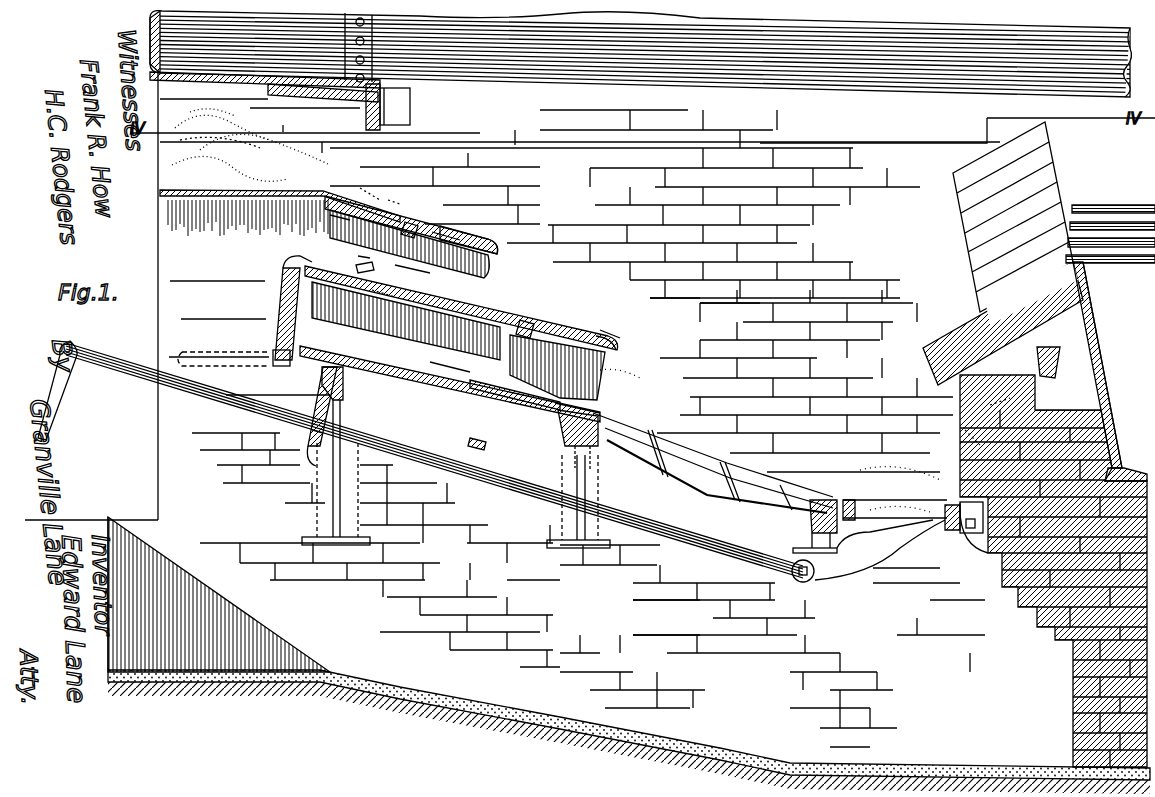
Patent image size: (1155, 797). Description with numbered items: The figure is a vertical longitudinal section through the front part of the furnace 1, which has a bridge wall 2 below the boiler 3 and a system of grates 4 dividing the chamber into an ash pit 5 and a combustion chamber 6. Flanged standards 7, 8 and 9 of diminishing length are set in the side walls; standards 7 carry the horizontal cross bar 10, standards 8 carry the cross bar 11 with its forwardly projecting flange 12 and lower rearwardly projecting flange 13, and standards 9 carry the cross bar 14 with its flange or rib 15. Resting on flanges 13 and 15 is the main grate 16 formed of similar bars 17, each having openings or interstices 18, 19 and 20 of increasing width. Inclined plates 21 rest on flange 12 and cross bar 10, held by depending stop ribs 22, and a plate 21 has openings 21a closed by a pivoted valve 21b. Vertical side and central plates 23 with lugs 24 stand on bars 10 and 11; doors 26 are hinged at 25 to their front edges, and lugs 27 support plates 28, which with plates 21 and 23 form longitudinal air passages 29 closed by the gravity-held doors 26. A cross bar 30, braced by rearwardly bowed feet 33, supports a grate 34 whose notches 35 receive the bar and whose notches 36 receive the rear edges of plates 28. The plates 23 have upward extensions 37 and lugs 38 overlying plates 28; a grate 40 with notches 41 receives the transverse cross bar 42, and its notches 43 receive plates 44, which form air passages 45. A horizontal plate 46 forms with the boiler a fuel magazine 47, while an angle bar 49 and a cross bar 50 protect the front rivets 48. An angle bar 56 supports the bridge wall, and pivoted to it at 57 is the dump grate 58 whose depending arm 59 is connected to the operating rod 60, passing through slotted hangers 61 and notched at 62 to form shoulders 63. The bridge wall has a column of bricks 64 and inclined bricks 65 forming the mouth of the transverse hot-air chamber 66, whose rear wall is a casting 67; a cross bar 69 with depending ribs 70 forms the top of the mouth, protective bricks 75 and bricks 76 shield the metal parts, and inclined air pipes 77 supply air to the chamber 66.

The furnace 1 is at (580, 427).
The bridge wall 2 is at (1073, 698).
The boiler 3 is at (640, 54).
The system of grates 4 is at (616, 340).
The ash pit 5 is at (645, 606).
The combustion chamber 6 is at (705, 274).
The flanged standards 7 is at (300, 520).
The flanged standards 8 is at (560, 527).
The flanged standards 9 is at (797, 548).
The horizontal cross bar 10 is at (345, 385).
The cross bar 11 is at (465, 359).
The forwardly projecting flange 12 is at (560, 428).
The rearwardly projecting flange 13 is at (600, 452).
The cross bar 14 is at (842, 492).
The forwardly projecting flange or rib 15 is at (807, 518).
The main grate 16 is at (705, 460).
The grate bars 17 is at (702, 432).
The openings or interstices 18 is at (717, 471).
The openings or interstices 19 is at (735, 482).
The openings or interstices 20 is at (783, 496).
The inclined plates 21 is at (400, 405).
The openings 21a is at (470, 390).
The pivoted valve 21b is at (470, 352).
The depending stop ribs 22 is at (550, 408).
The side plates and central plate 23 is at (620, 382).
The depending lugs 24 is at (482, 450).
The hinge 25 is at (273, 352).
The doors 26 is at (275, 296).
The lugs 27 is at (400, 296).
The plates 28 is at (300, 262).
The longitudinal air passages 29 is at (406, 321).
The cross bar 30 is at (330, 246).
The integrally-cast feet 33 is at (550, 368).
The grate 34 is at (606, 330).
The notches 35 is at (600, 338).
The notches 36 is at (525, 320).
The upward extensions 37 is at (311, 216).
The lugs 38 is at (370, 262).
The grate 40 is at (480, 238).
The notches 41 is at (416, 230).
The transverse cross bar 42 is at (402, 186).
The notches 43 is at (440, 236).
The plates 44 is at (359, 184).
The air passages 45 is at (409, 246).
The horizontal plate 46 is at (160, 195).
The fuel magazine 47 is at (180, 148).
The front rivets 48 is at (372, 26).
The angle bar 49 is at (410, 110).
The cross bar 50 is at (324, 107).
The angle bar 56 is at (980, 550).
The pivot 57 is at (968, 530).
The dump grate 58 is at (895, 500).
The depending arm 59 is at (848, 568).
The dump-grate-operating rod 60 is at (126, 358).
The slotted hangers 61 is at (310, 450).
The notch 62 is at (306, 466).
The rearwardly-disposed shoulder 63 is at (311, 435).
The vertical column of bricks 64 is at (958, 408).
The inclined bricks 65 is at (960, 445).
The transverse hot-air chamber 66 is at (1105, 400).
The casting 67 is at (1108, 390).
The cross bar 69 is at (985, 316).
The depending ribs 70 is at (1060, 360).
The bricks 75 is at (955, 195).
The bricks 76 is at (930, 348).
The air pipes 77 is at (1118, 237).